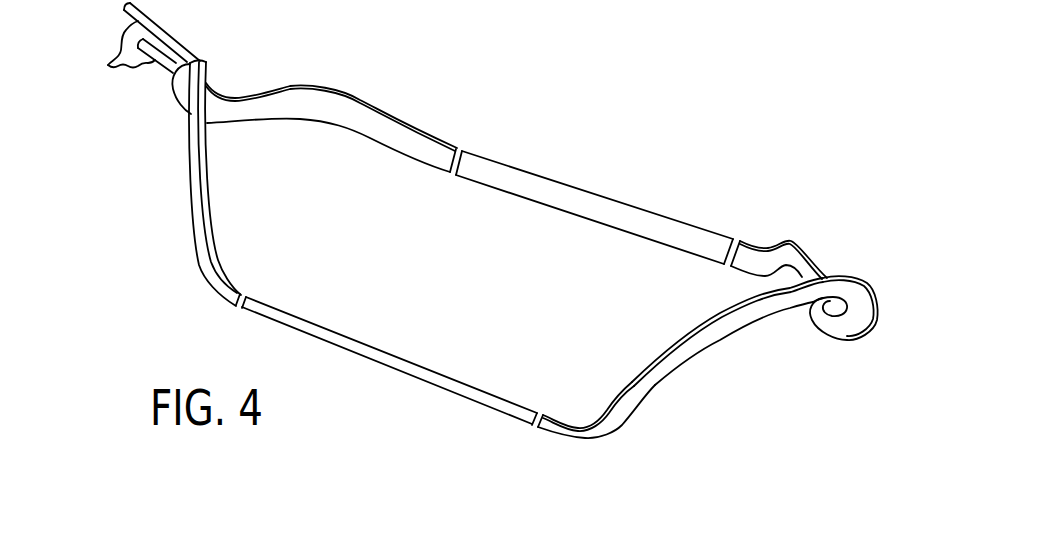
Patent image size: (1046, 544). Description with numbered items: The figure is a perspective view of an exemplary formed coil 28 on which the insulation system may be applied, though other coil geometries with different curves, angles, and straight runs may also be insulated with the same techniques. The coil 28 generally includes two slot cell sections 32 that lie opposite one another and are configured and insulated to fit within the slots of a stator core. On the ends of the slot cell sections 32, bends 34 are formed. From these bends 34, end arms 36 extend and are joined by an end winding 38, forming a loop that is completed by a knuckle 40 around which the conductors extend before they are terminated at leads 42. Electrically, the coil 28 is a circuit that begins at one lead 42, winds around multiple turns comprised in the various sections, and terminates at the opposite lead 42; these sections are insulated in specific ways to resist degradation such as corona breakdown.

The coil 28 is at (727, 152).
The slot cell sections 32 is at (572, 198).
The bends 34 is at (375, 122).
The end arms 36 is at (707, 350).
The end winding 38 is at (827, 290).
The knuckle 40 is at (220, 108).
The leads 42 is at (108, 66).